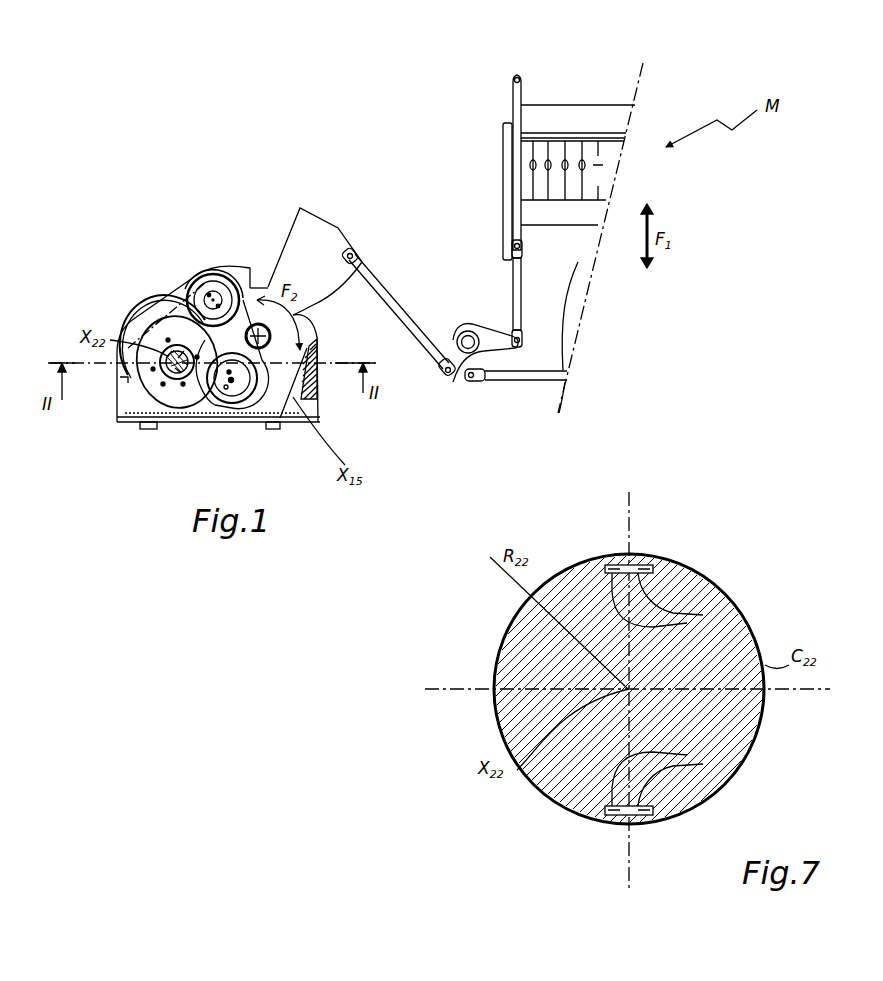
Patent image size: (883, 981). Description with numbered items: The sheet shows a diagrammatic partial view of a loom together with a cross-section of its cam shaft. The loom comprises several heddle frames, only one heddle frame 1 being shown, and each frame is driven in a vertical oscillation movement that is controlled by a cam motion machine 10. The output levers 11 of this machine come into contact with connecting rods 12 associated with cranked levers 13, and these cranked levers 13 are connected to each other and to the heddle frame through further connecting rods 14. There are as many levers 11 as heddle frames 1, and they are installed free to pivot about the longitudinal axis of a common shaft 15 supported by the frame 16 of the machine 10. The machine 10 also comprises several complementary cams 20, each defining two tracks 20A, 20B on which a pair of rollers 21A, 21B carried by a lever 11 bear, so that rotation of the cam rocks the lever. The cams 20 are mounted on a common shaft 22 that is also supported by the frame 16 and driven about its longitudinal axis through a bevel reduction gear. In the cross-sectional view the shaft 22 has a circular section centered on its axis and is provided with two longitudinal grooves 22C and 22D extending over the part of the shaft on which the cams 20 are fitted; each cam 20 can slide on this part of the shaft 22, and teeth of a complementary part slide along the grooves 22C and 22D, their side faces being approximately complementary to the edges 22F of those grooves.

In FIG. 1, the heddle frame 1 is at (548, 115).
In FIG. 1, the cam motion machine 10 is at (215, 246).
In FIG. 1, the output lever 11 is at (303, 208).
In FIG. 1, the connecting rod 12 is at (400, 303).
In FIG. 1, the cranked lever 13 is at (500, 365).
In FIG. 1, the connecting rod 14 is at (522, 302).
In FIG. 1, the common shaft 15 is at (252, 324).
In FIG. 1, the frame 16 is at (320, 377).
In FIG. 1, the complementary cam 20 is at (130, 387).
In FIG. 1, the track 20A is at (160, 323).
In FIG. 1, the track 20B is at (168, 315).
In FIG. 1, the roller 21A is at (198, 290).
In FIG. 1, the roller 21B is at (207, 400).
In FIG. 1, the common shaft 22 is at (177, 380).
In FIG. 7, the longitudinal groove 22C is at (632, 557).
In FIG. 7, the longitudinal groove 22D is at (631, 822).
In FIG. 7, the groove edge 22F is at (687, 623).